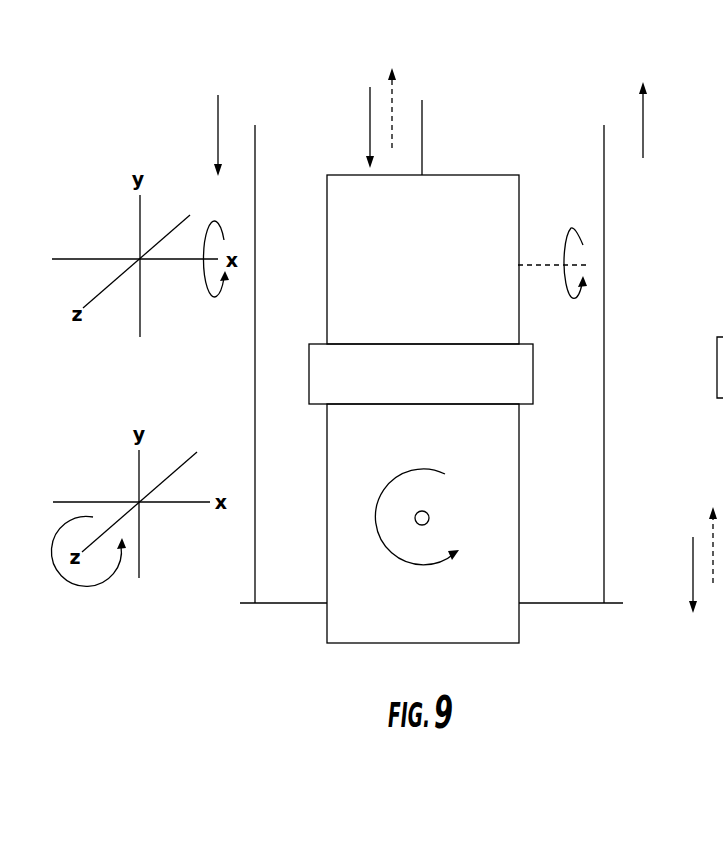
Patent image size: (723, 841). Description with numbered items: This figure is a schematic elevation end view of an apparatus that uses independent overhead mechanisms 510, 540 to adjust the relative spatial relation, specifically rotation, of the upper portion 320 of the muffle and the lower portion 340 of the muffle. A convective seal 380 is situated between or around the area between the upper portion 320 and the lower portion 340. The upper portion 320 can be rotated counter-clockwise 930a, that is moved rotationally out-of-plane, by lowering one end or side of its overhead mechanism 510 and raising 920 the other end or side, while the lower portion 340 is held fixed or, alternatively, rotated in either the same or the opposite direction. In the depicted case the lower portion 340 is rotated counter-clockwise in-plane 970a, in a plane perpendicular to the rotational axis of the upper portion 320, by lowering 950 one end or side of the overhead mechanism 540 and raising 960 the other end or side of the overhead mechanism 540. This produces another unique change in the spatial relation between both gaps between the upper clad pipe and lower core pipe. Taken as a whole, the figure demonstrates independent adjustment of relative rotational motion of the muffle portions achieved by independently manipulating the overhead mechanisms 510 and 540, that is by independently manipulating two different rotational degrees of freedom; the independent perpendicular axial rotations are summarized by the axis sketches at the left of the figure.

The upper portion of the muffle 320 is at (512, 212).
The convective seal 380 is at (527, 343).
The lower portion of the muffle 340 is at (510, 505).
The first independent overhead adjustment mechanism 510 is at (423, 145).
The overhead mechanism 540 is at (604, 290).
The counter-clockwise rotation of the upper portion 930a is at (583, 245).
The counter-clockwise in-plane rotation of the lower portion 970a is at (430, 467).
The lowering of one end of the overhead mechanism 950 is at (217, 128).
The raising of the other end of the overhead mechanism 960 is at (644, 127).
The raising of the other side of the overhead mechanism 920 is at (393, 96).